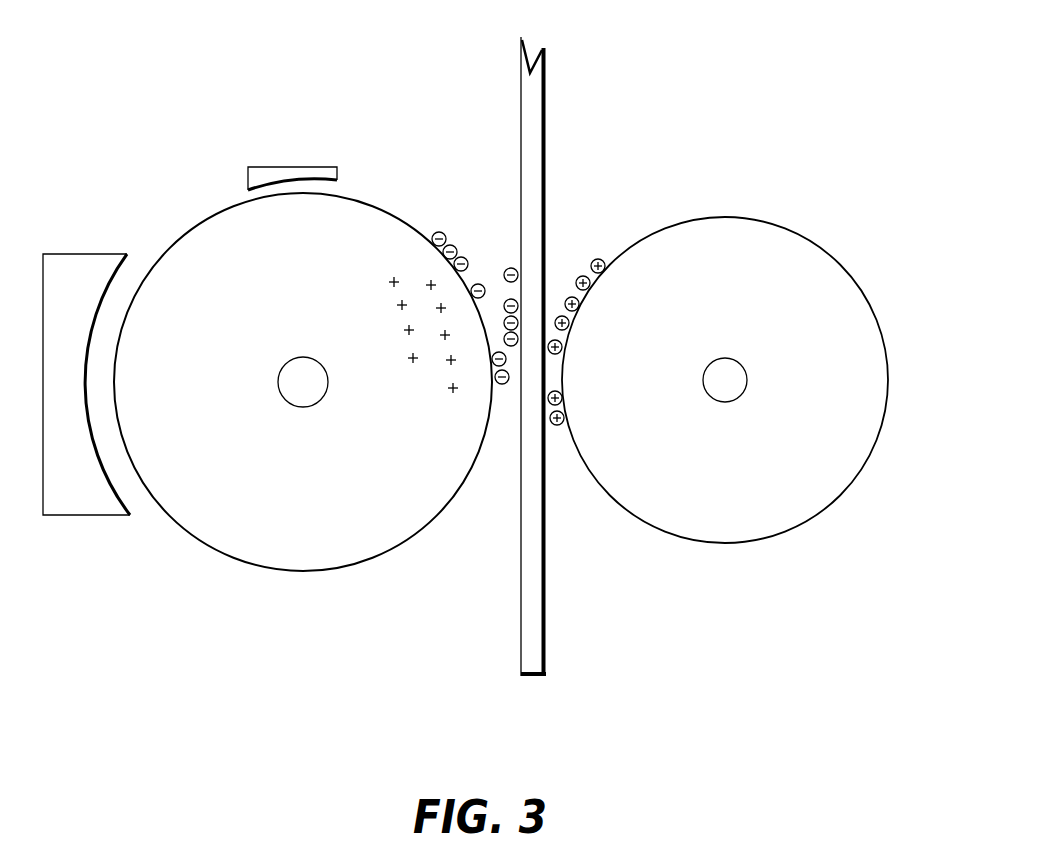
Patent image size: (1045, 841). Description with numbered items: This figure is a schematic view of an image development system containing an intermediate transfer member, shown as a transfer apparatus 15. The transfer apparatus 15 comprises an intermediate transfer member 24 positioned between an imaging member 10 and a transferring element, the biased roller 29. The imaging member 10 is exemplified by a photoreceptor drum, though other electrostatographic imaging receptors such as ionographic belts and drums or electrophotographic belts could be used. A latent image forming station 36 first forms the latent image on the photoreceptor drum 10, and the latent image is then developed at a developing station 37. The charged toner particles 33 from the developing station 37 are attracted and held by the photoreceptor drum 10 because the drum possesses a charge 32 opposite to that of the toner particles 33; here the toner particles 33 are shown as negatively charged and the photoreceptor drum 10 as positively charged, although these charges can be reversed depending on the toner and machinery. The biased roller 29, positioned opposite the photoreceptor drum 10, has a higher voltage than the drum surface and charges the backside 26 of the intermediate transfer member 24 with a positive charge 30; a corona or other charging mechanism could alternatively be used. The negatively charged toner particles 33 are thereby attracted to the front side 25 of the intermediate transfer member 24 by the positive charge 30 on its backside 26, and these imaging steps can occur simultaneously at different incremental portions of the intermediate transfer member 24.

The imaging member 10 is at (280, 555).
The transfer apparatus 15 is at (688, 119).
The intermediate transfer member 24 is at (531, 349).
The front side 25 is at (518, 138).
The backside 26 is at (544, 74).
The biased roller 29 is at (676, 526).
The positive charge 30 is at (599, 256).
The charge 32 is at (394, 280).
The toner particles 33 is at (445, 233).
The latent image forming station 36 is at (90, 270).
The developing station 37 is at (294, 170).